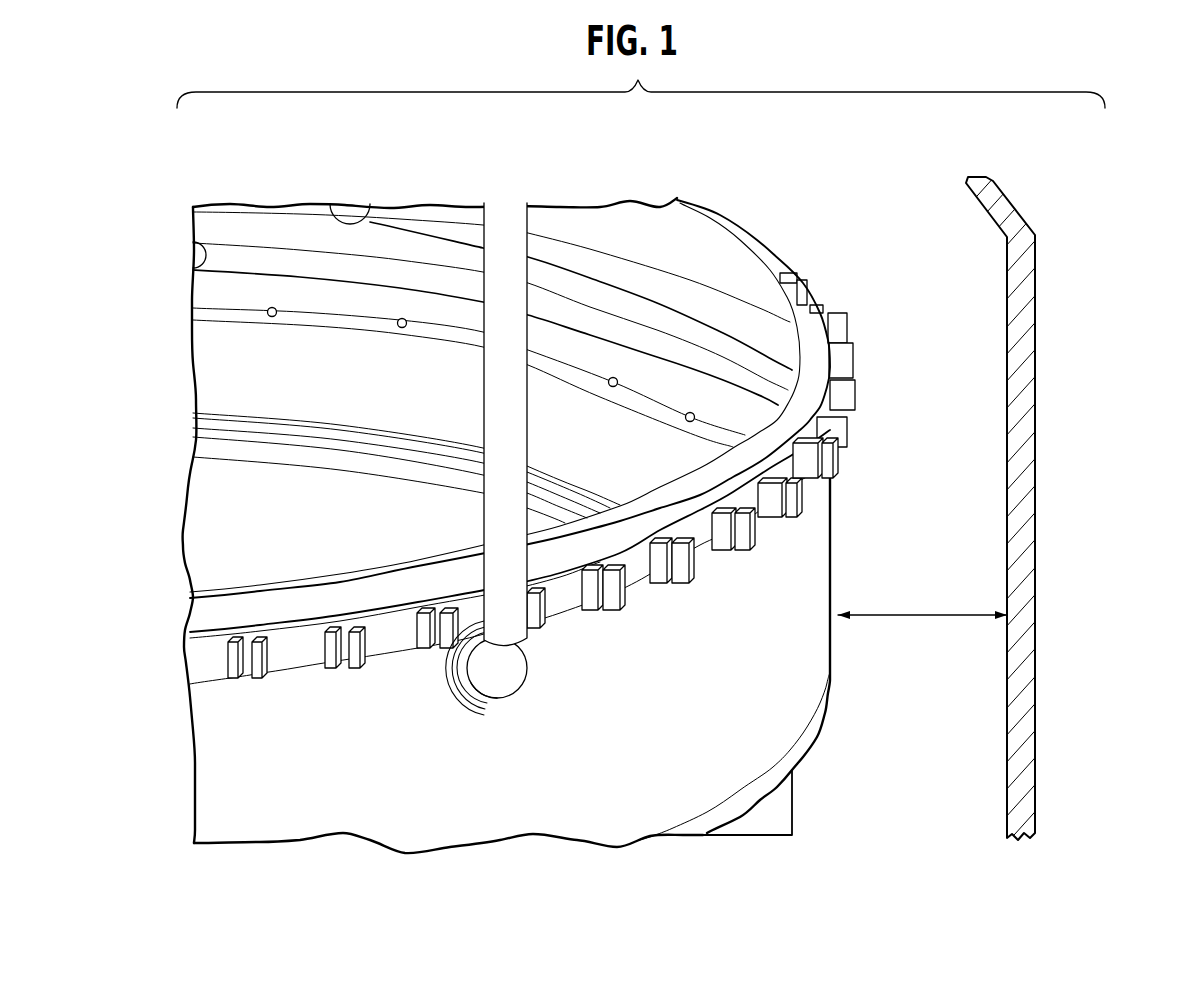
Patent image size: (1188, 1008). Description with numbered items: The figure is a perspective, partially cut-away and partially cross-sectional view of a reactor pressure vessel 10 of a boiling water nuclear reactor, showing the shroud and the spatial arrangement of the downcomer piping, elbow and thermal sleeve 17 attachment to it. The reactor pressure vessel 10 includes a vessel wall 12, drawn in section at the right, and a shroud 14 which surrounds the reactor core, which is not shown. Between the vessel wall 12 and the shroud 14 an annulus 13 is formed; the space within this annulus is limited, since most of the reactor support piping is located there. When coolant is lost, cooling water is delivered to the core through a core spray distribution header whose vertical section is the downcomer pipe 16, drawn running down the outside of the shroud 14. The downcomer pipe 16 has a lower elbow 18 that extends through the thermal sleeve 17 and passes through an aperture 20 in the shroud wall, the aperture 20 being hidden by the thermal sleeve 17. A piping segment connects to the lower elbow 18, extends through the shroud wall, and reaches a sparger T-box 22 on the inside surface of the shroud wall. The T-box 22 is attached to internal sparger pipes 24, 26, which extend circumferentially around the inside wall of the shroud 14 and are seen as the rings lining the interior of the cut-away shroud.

The reactor pressure vessel 10 is at (972, 163).
The vessel wall 12 is at (1033, 645).
The annulus 13 is at (923, 614).
The shroud 14 is at (833, 558).
The downcomer pipe 16 is at (528, 278).
The thermal sleeve 17 is at (480, 698).
The lower elbow 18 is at (495, 688).
The aperture 20 is at (450, 690).
The sparger T-box 22 is at (352, 202).
The internal sparger pipe 24 is at (228, 220).
The internal sparger pipe 26 is at (737, 403).